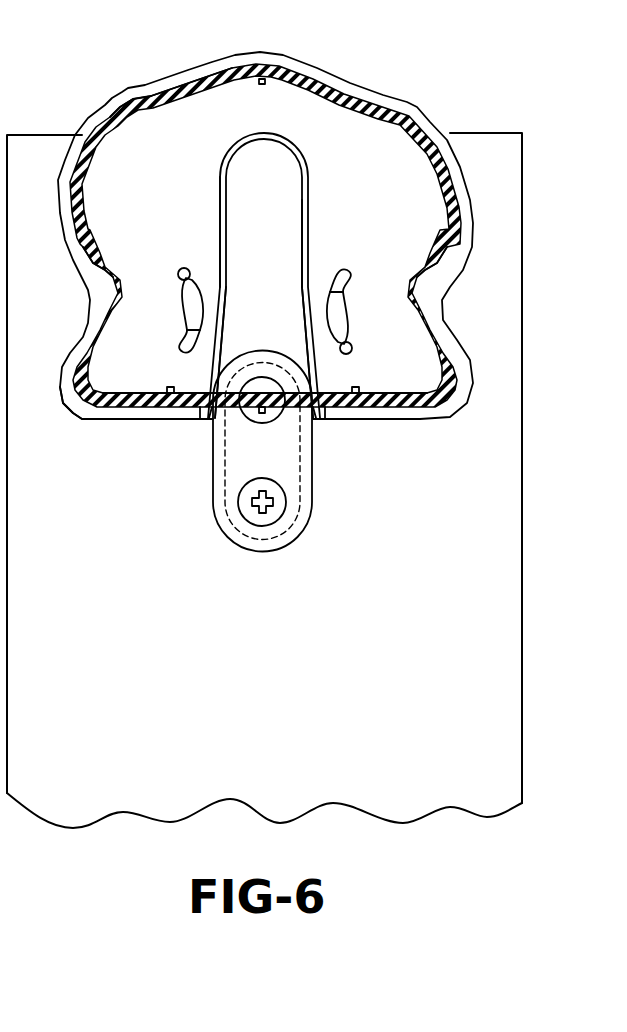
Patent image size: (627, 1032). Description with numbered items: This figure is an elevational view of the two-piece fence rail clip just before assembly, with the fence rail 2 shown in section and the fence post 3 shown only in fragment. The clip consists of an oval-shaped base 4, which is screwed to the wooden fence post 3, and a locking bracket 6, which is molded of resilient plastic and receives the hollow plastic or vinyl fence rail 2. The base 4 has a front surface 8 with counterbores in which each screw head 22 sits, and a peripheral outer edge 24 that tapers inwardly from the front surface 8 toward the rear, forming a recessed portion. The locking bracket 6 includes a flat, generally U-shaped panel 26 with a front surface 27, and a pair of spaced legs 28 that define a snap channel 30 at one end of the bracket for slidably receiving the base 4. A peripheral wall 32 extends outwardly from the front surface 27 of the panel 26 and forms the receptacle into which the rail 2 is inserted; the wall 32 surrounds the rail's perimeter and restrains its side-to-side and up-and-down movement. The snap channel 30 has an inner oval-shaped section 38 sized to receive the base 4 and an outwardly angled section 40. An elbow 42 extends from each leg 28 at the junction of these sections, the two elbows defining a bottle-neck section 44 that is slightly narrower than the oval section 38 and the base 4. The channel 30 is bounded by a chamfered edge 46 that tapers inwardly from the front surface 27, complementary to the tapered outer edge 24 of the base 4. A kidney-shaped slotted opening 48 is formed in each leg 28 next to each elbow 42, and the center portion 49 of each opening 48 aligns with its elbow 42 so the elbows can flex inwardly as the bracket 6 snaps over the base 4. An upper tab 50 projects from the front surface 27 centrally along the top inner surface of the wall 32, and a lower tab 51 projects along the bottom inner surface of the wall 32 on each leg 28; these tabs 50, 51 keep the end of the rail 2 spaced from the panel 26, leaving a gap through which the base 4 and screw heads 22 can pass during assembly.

The fence rail 2 is at (350, 93).
The fence post 3 is at (492, 668).
The base 4 is at (279, 472).
The locking bracket 6 is at (432, 113).
The front surface 8 is at (244, 457).
The screw head 22 is at (273, 513).
The peripheral outer edge 24 is at (307, 493).
The panel 26 is at (142, 163).
The front surface 27 is at (187, 143).
The legs 28 is at (125, 348).
The snap channel 30 is at (245, 333).
The peripheral wall 32 is at (118, 414).
The oval-shaped section 38 is at (281, 203).
The outwardly angled section 40 is at (266, 334).
The elbow 42 is at (230, 307).
The bottle-neck section 44 is at (263, 297).
The chamfered edge 46 is at (221, 197).
The kidney-shaped slotted opening 48 is at (181, 269).
The center portion 49 is at (201, 309).
The upper tab 50 is at (262, 86).
The lower tab 51 is at (353, 387).